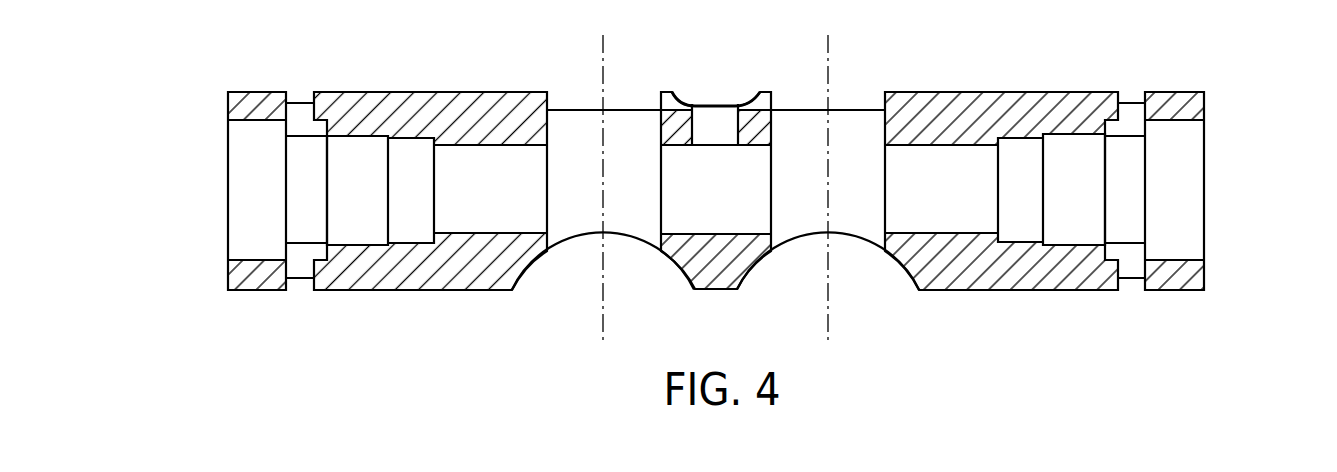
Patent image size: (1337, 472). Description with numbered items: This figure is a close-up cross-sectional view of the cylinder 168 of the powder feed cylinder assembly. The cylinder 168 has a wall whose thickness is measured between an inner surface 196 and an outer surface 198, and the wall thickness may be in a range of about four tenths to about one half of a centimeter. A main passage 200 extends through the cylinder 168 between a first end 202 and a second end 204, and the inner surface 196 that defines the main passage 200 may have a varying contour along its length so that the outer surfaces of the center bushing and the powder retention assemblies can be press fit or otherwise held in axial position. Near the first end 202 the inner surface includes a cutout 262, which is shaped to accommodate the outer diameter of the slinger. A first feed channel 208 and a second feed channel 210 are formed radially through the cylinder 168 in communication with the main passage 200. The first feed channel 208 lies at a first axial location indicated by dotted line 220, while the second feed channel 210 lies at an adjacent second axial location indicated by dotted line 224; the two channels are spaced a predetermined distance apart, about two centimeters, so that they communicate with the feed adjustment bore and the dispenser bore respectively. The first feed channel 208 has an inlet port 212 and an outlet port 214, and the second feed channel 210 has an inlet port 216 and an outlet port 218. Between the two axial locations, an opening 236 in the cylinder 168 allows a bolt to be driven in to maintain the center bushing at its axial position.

The first end 202 is at (227, 103).
The second end 204 is at (1205, 103).
The cutout 262 is at (322, 128).
The first feed channel 208 is at (572, 113).
The inlet port 212 is at (627, 108).
The dotted line 220 is at (600, 270).
The outlet port 214 is at (638, 240).
The main passage 200 is at (692, 205).
The opening 236 is at (728, 110).
The second feed channel 210 is at (795, 118).
The inlet port 216 is at (853, 108).
The outlet port 218 is at (793, 240).
The dotted line 224 is at (830, 267).
The cylinder 168 is at (1030, 92).
The outer surface 198 is at (930, 92).
The inner surface 196 is at (942, 147).